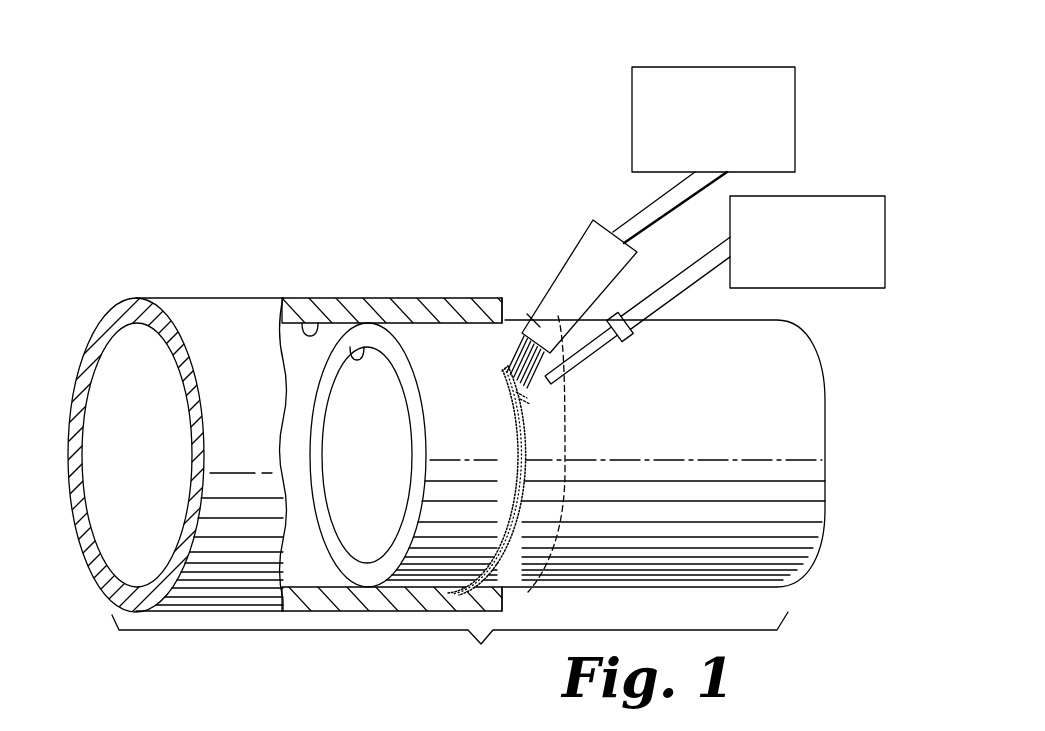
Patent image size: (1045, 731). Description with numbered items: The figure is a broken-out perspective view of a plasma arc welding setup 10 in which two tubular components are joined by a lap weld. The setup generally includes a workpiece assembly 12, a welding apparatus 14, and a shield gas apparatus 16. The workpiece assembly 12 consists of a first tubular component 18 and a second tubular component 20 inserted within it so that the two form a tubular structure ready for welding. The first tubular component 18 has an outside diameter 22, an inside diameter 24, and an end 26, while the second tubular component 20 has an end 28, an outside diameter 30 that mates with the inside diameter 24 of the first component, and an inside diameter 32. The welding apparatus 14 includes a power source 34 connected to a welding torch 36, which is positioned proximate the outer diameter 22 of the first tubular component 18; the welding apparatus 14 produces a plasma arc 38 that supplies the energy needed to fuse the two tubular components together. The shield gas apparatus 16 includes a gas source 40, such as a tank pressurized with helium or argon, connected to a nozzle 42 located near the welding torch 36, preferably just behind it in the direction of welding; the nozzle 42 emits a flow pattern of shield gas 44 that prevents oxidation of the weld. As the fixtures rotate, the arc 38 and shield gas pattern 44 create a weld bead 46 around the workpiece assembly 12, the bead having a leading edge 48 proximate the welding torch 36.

The plasma arc welding setup 10 is at (306, 136).
The workpiece assembly 12 is at (481, 644).
The welding apparatus 14 is at (615, 194).
The shield gas apparatus 16 is at (716, 293).
The first tubular component 18 is at (187, 310).
The second tubular component 20 is at (808, 381).
The outside diameter 22 is at (442, 298).
The inside diameter 24 is at (306, 323).
The end 26 is at (505, 313).
The end 28 is at (358, 568).
The outside diameter 30 is at (417, 322).
The inside diameter 32 is at (357, 347).
The power source 34 is at (683, 77).
The welding torch 36 is at (592, 228).
The plasma arc 38 is at (516, 352).
The gas source 40 is at (802, 210).
The nozzle 42 is at (622, 342).
The shield gas flow pattern 44 is at (527, 393).
The weld bead 46 is at (513, 432).
The leading edge 48 is at (503, 368).